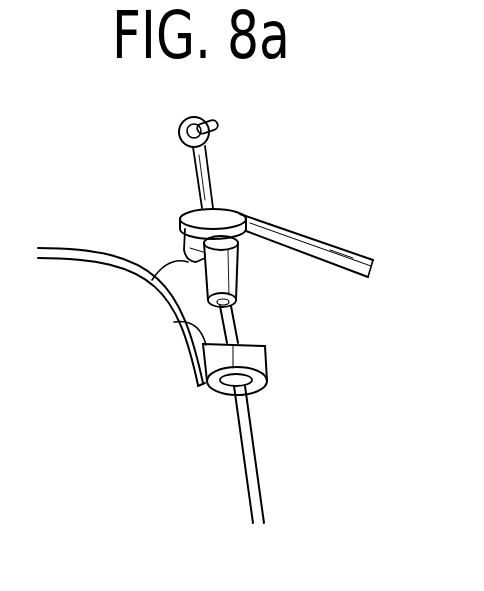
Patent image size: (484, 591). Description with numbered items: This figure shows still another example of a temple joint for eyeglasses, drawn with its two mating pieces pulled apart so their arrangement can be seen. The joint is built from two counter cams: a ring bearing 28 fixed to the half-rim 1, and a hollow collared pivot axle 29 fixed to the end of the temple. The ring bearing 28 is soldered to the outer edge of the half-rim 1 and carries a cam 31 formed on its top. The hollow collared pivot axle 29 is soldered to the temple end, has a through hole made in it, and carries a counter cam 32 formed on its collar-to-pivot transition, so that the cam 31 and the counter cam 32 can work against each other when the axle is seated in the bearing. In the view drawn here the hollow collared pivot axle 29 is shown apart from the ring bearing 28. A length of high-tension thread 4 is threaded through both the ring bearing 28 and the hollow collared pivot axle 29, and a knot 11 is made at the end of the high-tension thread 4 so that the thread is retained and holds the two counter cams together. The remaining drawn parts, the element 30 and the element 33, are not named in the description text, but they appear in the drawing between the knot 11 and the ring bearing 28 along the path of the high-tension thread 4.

The half-rim 1 is at (55, 250).
The high-tension thread 4 is at (258, 482).
The knot 11 is at (219, 127).
The ring bearing 28 is at (268, 362).
The hollow collared pivot axle 29 is at (238, 280).
The flange disc 30 is at (180, 242).
The cam 31 is at (176, 322).
The counter cam 32 is at (152, 279).
The bushing hole 33 is at (228, 395).